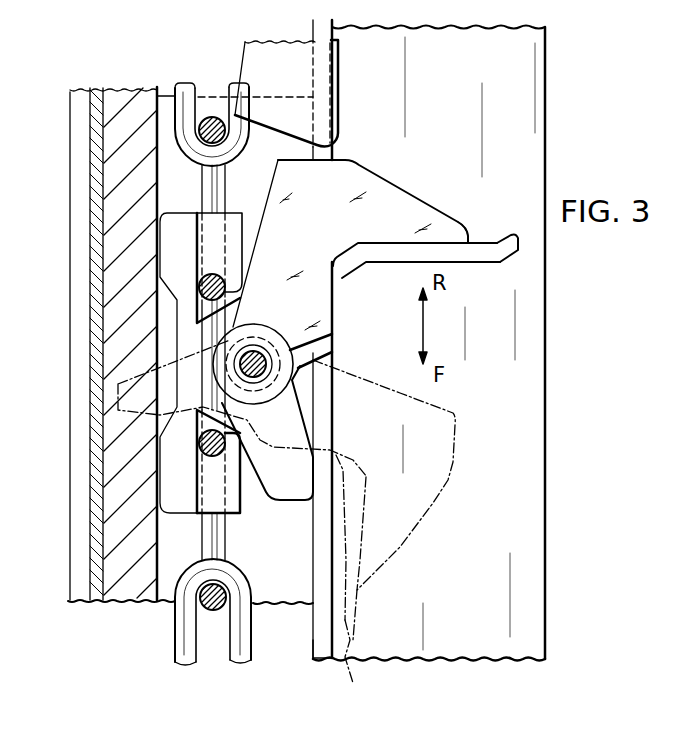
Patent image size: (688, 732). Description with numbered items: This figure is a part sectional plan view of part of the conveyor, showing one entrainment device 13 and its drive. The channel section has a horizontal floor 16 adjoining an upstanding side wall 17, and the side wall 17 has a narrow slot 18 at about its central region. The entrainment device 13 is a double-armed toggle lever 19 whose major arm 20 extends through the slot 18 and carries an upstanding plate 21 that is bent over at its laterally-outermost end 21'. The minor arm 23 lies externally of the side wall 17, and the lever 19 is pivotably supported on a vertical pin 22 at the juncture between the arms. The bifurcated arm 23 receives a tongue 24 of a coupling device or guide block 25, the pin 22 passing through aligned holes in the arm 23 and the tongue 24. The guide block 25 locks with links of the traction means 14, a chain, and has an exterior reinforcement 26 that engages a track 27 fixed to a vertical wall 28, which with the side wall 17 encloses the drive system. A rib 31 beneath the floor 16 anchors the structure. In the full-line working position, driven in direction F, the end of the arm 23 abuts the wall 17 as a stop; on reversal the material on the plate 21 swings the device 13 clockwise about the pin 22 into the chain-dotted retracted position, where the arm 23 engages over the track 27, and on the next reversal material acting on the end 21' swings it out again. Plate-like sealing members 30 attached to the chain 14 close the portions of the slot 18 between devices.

The entrainment device 13 is at (472, 233).
The traction means 14 is at (183, 95).
The floor 16 is at (517, 400).
The side wall 17 is at (320, 644).
The slot 18 is at (330, 553).
The toggle lever 19 is at (308, 338).
The major arm 20 is at (337, 230).
The upstanding plate 21 is at (420, 433).
The bent-over end 21' is at (480, 467).
The vertical pin 22 is at (258, 358).
The minor arm 23 is at (118, 384).
The tongue 24 is at (236, 334).
The coupling device or guide block 25 is at (187, 327).
The exterior reinforcement 26 is at (177, 240).
The track 27 is at (110, 463).
The vertical wall 28 is at (100, 372).
The sealing means 30 is at (305, 118).
The rib 31 is at (297, 2).